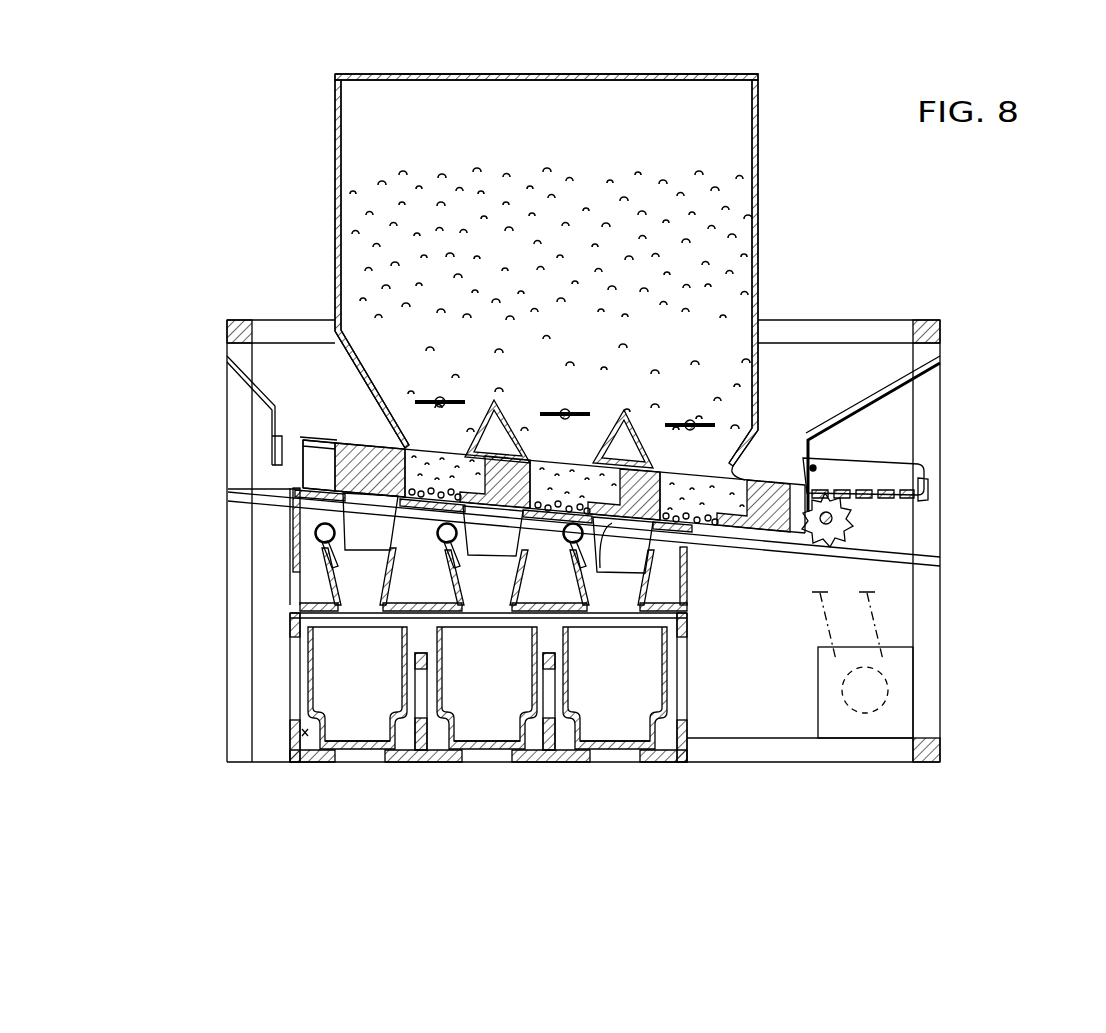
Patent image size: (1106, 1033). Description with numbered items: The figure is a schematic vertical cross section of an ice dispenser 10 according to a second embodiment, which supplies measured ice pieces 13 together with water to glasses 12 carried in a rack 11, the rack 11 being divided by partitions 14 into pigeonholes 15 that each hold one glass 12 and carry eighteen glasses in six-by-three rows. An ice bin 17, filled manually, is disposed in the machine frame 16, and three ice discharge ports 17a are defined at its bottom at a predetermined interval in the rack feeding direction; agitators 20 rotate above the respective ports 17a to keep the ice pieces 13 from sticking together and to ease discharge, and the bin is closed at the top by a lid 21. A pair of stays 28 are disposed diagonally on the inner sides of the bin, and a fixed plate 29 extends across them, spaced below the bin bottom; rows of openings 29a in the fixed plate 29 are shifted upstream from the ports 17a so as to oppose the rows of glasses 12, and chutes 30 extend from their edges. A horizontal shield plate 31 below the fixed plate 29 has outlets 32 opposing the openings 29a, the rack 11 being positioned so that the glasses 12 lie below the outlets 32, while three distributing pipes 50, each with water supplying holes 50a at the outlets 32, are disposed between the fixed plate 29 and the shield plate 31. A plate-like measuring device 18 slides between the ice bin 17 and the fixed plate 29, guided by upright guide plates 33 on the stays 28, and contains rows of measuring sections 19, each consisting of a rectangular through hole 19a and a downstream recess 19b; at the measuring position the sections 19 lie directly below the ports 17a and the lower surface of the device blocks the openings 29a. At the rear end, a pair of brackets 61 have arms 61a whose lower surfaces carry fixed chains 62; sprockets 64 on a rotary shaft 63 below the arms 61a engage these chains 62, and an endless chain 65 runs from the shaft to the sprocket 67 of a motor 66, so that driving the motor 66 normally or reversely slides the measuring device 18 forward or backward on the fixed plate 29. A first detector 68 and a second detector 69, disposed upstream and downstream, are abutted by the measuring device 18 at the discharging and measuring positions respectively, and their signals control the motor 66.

The ice dispenser 10 is at (300, 108).
The rack 11 is at (294, 728).
The glasses 12 is at (310, 682).
The ice pieces 13 is at (366, 240).
The partitions 14 is at (420, 760).
The pigeonholes 15 is at (306, 740).
The machine frame 16 is at (276, 322).
The ice bin 17 is at (760, 112).
The ice discharge ports 17a is at (533, 460).
The measuring device 18 is at (330, 448).
The measuring sections 19 is at (408, 457).
The through hole 19a is at (402, 500).
The recess 19b is at (532, 510).
The agitators 20 is at (440, 396).
The hopper lid 21 is at (420, 72).
The stays 28 is at (912, 578).
The fixed plate 29 is at (300, 484).
The openings 29a is at (252, 506).
The chute 30 is at (398, 512).
The shield plate 31 is at (298, 592).
The outlets 32 is at (385, 598).
The guide plates 33 is at (302, 440).
The distributing pipes 50 is at (314, 535).
The water supplying hole 50a is at (322, 550).
The brackets 61 is at (814, 436).
The arms 61a is at (890, 472).
The chain 62 is at (922, 503).
The rotary shaft 63 is at (820, 535).
The sprockets 64 is at (935, 554).
The endless chain 65 is at (880, 628).
The motor 66 is at (905, 705).
The sprocket 67 is at (880, 672).
The first detector 68 is at (270, 455).
The second detector 69 is at (816, 480).